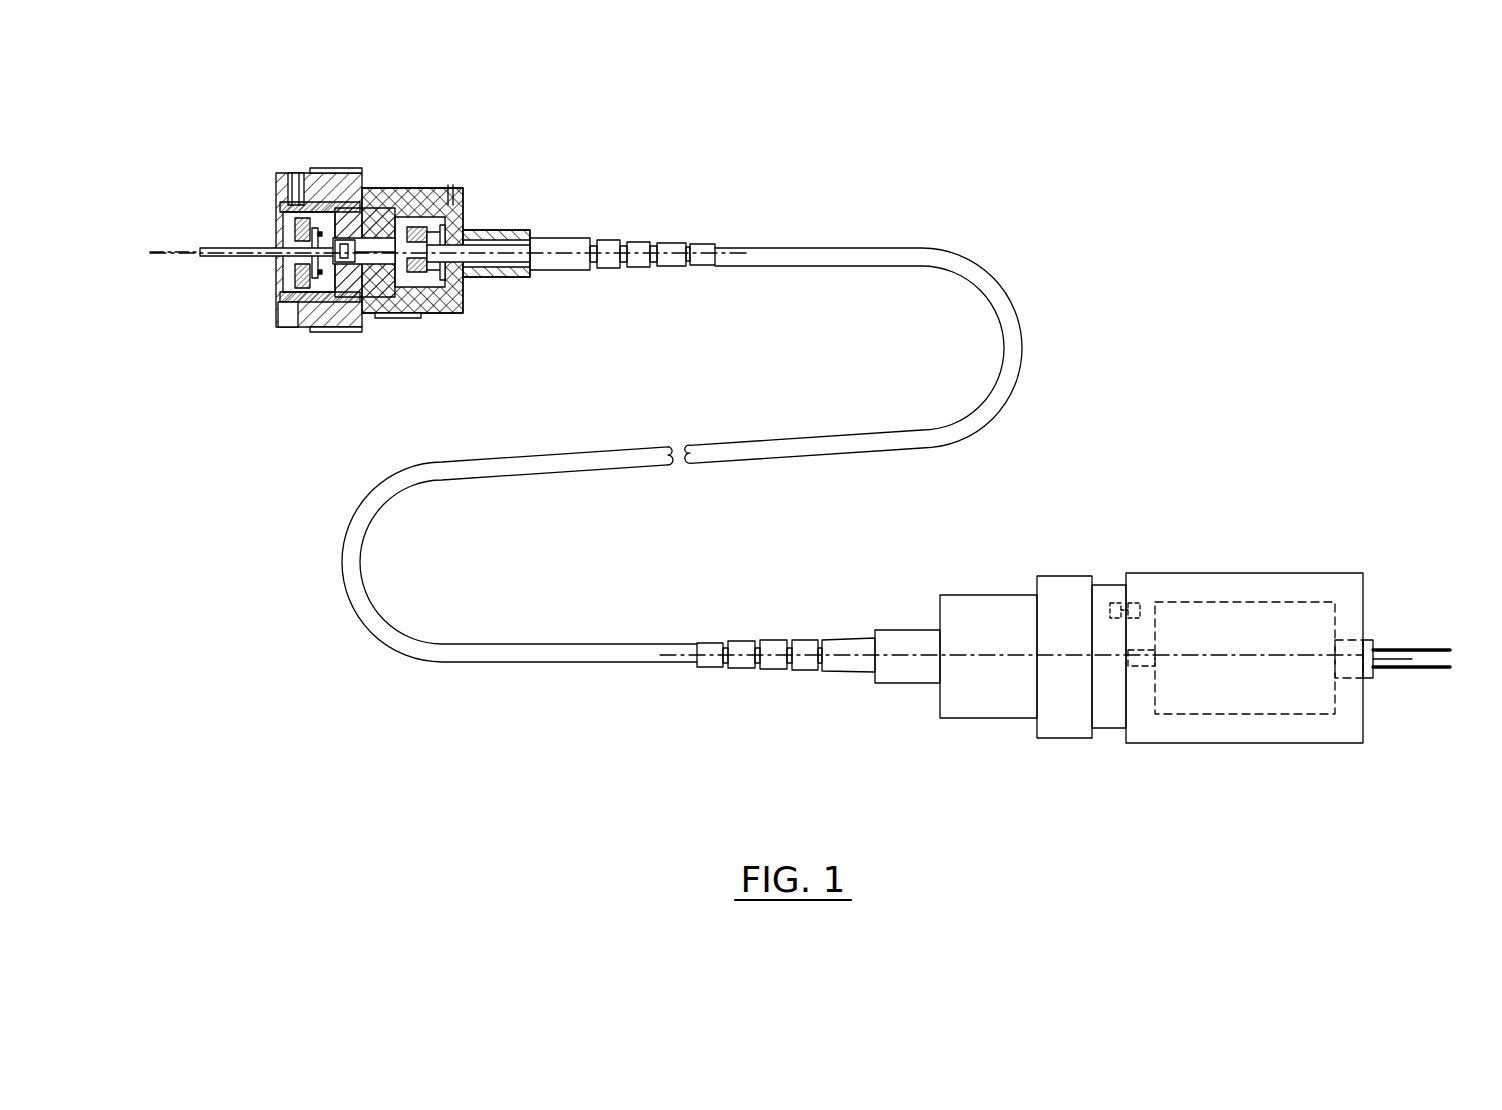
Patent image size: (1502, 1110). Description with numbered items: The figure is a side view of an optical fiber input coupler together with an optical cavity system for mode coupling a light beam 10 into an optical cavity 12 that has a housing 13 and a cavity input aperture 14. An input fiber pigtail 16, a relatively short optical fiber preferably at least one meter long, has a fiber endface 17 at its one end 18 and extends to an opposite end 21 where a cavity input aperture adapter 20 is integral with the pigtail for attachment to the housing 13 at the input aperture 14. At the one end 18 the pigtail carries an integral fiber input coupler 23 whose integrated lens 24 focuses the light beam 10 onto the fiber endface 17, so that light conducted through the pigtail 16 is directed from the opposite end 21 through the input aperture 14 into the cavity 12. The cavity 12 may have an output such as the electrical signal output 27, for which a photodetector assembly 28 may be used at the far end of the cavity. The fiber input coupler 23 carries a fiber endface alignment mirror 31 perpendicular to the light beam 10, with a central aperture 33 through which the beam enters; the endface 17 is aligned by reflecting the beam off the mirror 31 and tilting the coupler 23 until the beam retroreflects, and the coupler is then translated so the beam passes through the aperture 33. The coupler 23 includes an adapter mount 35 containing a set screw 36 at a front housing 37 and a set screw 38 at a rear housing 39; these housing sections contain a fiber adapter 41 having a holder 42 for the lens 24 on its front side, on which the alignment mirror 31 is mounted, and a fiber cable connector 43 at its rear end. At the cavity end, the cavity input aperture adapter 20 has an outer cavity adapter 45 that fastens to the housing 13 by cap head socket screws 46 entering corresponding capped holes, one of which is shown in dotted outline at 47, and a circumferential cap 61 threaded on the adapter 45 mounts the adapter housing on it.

The light beam 10 is at (275, 256).
The optical cavity 12 is at (1297, 602).
The housing 13 is at (1280, 743).
The cavity input aperture 14 is at (1144, 666).
The input fiber pigtail 16 is at (800, 247).
The fiber endface 17 is at (295, 222).
The one end 18 is at (350, 332).
The cavity input aperture adapter 20 is at (940, 718).
The opposite end 21 is at (600, 663).
The fiber input coupler 23 is at (478, 230).
The integrated lens 24 is at (290, 327).
The electrical signal output 27 is at (1407, 670).
The photodetector assembly 28 is at (1373, 640).
The fiber endface alignment mirror 31 is at (290, 292).
The aperture 33 is at (300, 246).
The adapter mount 35 is at (400, 318).
The set screw 36 is at (283, 177).
The front housing 37 is at (280, 203).
The set screw 38 is at (442, 192).
The rear housing 39 is at (505, 278).
The fiber adapter 41 is at (365, 193).
The holder 42 is at (328, 170).
The fiber cable connector 43 is at (462, 203).
The outer cavity adapter 45 is at (1110, 728).
The cap head socket screws 46 is at (1112, 603).
The capped hole 47 is at (1140, 605).
The circumferential cap 61 is at (1037, 738).